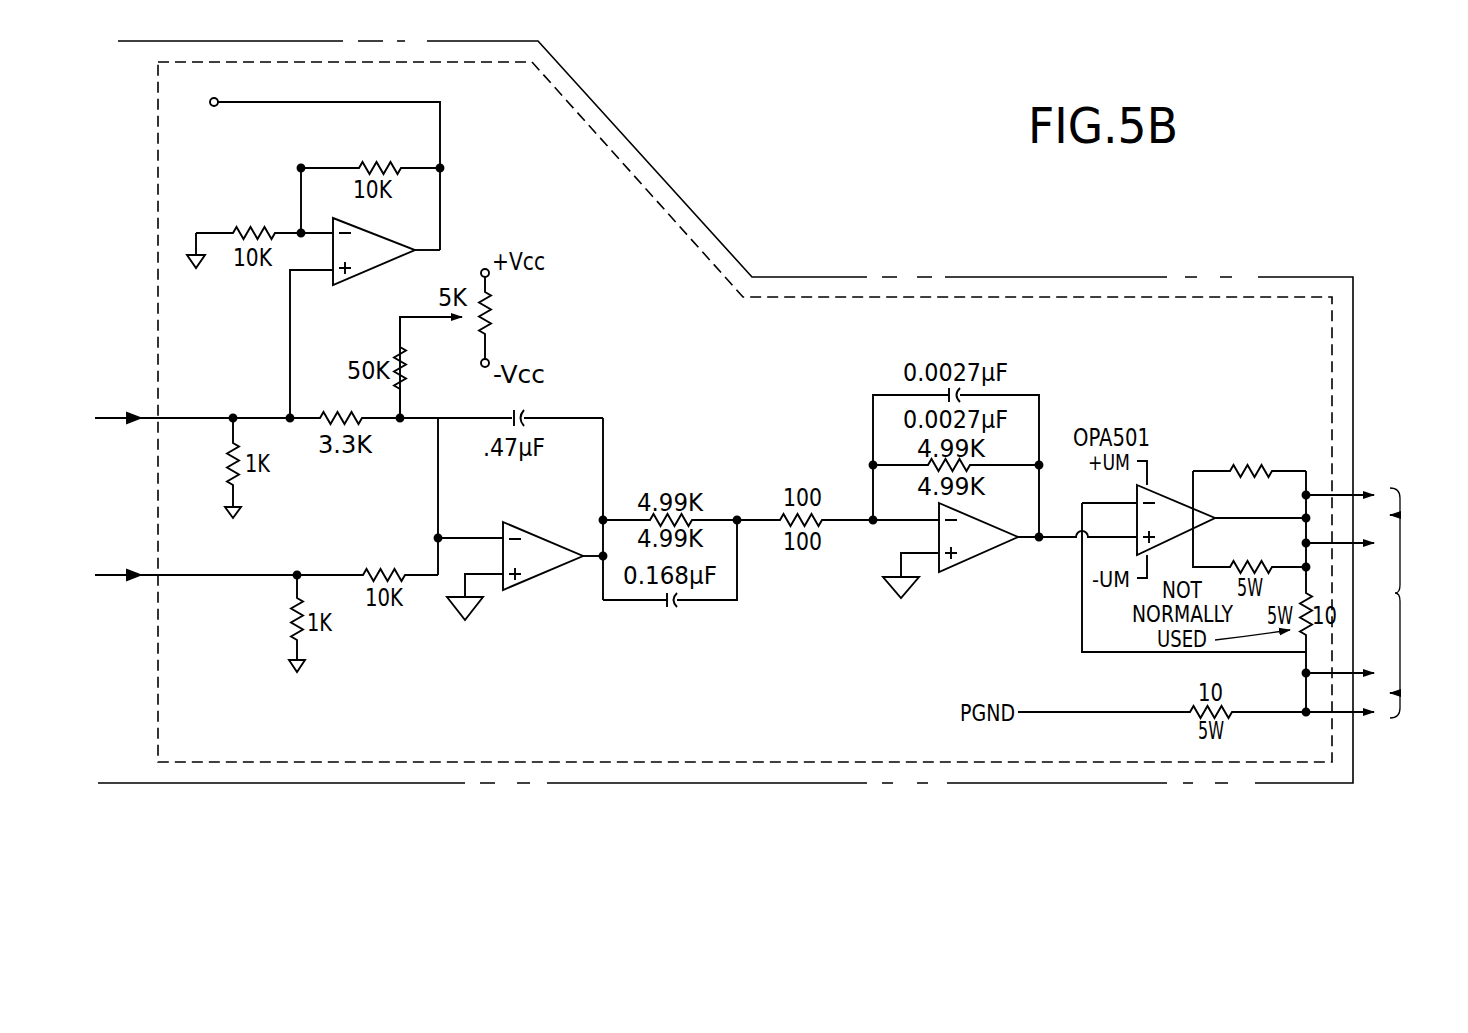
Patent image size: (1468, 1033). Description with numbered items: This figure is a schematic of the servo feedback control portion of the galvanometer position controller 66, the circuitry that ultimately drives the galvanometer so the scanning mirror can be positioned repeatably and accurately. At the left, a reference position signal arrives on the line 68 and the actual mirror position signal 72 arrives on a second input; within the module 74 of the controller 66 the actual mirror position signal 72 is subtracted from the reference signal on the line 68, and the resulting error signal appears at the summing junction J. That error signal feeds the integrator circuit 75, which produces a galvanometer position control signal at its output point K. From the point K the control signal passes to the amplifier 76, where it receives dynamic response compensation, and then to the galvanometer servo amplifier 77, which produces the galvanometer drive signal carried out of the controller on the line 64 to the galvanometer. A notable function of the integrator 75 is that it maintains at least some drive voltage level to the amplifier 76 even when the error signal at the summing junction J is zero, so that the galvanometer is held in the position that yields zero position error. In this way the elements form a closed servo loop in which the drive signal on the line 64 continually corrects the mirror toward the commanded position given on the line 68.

The line 64 is at (1397, 510).
The galvanometer position controller 66 is at (1124, 270).
The line 68 is at (110, 416).
The actual mirror position signal 72 is at (108, 578).
The module 74 is at (793, 302).
The integrator circuit 75 is at (609, 419).
The amplifier 76 is at (971, 563).
The galvanometer servo amplifier 77 is at (1248, 460).
The summing junction J is at (433, 535).
The output point K is at (609, 509).